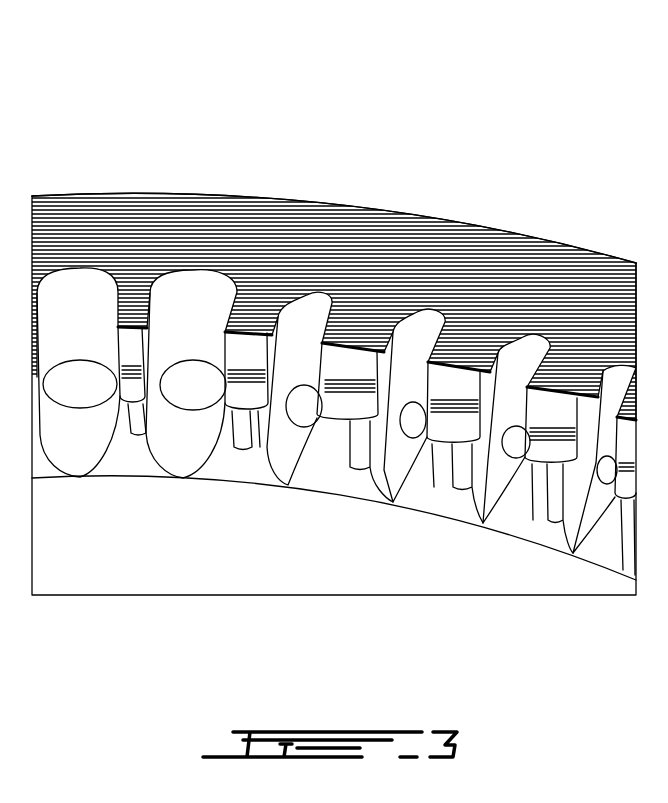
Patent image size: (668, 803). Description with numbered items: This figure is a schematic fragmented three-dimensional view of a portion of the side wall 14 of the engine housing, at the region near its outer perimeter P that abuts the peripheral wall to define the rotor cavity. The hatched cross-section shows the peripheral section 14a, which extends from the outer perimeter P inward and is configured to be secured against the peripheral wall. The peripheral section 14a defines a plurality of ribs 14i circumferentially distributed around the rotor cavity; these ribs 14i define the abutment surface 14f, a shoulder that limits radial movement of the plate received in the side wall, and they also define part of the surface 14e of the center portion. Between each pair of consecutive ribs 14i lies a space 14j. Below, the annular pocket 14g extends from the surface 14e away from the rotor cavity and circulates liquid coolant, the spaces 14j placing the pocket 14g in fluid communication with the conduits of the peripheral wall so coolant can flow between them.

The side wall 14 is at (497, 224).
The peripheral section 14a is at (318, 214).
The surface of the center portion 14e is at (343, 410).
The abutment surface 14f is at (352, 363).
The pocket 14g is at (441, 575).
The ribs 14i is at (136, 318).
The spaces 14j is at (540, 337).
The outer perimeter P is at (562, 246).